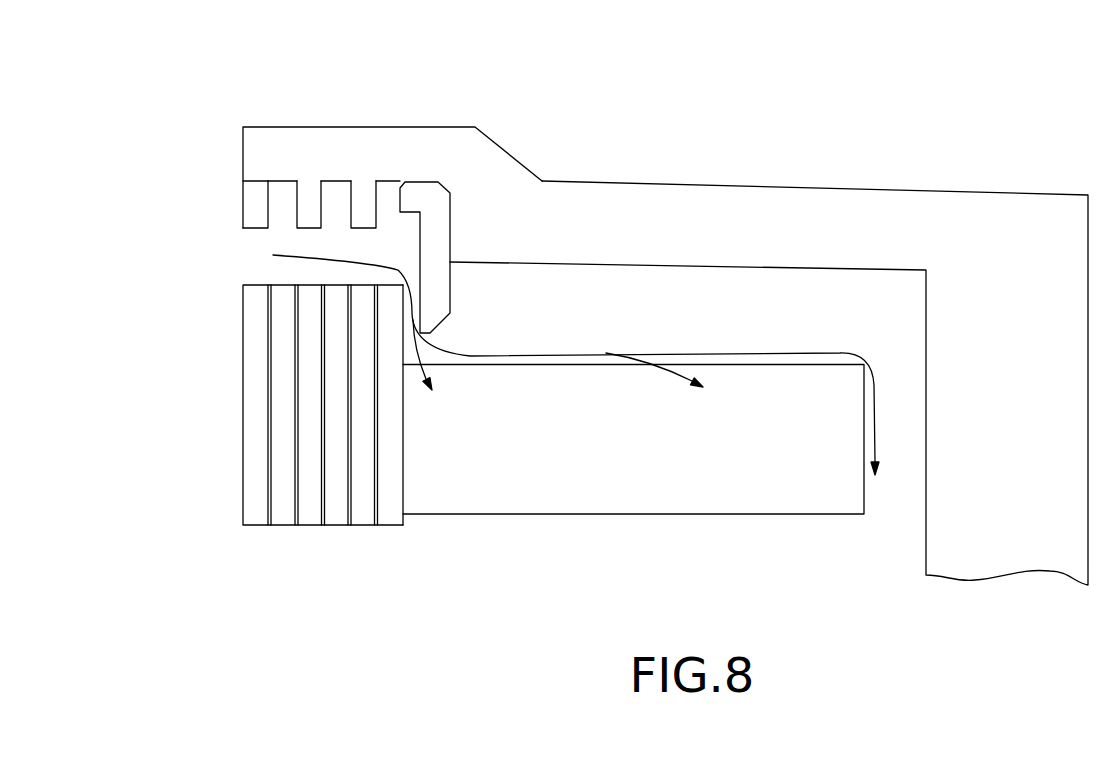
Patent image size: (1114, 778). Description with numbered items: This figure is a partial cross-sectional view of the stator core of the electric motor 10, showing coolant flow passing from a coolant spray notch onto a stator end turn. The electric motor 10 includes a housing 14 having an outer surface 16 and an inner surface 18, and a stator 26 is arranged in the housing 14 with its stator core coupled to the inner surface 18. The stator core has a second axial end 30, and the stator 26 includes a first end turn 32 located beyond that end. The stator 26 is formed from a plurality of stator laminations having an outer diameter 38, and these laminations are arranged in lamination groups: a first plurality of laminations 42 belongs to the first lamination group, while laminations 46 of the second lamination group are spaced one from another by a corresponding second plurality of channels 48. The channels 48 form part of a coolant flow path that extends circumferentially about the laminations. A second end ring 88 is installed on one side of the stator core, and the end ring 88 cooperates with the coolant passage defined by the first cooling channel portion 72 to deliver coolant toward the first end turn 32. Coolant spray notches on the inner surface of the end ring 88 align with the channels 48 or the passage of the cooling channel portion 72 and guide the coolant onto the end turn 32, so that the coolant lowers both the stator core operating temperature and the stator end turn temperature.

The electric motor 10 is at (417, 247).
The housing 14 is at (275, 115).
The outer surface 16 is at (350, 132).
The inner surface 18 is at (532, 263).
The stator 26 is at (280, 547).
The second axial end 30 is at (403, 483).
The first end turn 32 is at (543, 482).
The outer diameter 38 is at (360, 180).
The first plurality of laminations 42 is at (387, 387).
The laminations of second lamination group 46 is at (360, 452).
The second plurality of channels 48 is at (310, 193).
The first cooling channel portion 72 is at (235, 257).
The second end ring 88 is at (432, 257).